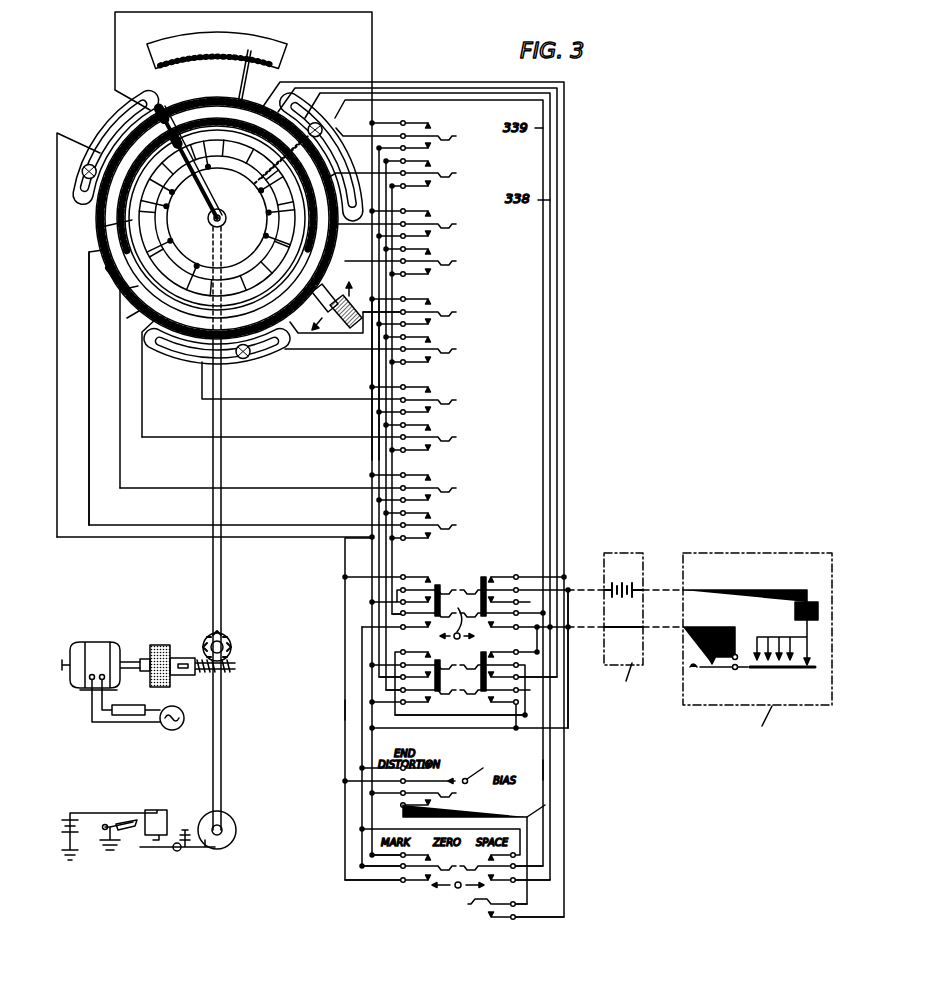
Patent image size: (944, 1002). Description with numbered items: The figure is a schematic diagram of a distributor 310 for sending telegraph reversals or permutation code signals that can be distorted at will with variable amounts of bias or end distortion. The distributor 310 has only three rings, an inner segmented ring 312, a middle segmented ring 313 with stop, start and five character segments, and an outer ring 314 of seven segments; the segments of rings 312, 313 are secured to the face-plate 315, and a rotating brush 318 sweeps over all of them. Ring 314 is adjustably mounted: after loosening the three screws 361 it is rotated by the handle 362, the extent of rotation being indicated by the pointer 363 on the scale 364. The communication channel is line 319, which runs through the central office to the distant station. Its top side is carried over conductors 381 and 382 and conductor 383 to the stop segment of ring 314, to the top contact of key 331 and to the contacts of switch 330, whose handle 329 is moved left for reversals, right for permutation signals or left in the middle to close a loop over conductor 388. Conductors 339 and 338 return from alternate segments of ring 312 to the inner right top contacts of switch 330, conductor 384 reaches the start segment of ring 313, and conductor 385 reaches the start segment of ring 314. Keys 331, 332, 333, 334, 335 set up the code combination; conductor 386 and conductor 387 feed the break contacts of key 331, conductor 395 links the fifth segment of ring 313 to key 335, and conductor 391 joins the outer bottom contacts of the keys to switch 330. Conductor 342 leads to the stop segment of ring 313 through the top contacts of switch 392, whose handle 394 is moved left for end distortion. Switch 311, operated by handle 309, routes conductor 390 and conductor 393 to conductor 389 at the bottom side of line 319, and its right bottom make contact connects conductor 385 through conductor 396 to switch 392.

The distributor 310 is at (207, 218).
The ring 312 is at (98, 228).
The ring 313 is at (140, 268).
The ring 314 is at (127, 318).
The face-plate 315 is at (229, 228).
The brush 318 is at (213, 210).
The conductor 338 is at (248, 192).
The conductor 339 is at (270, 176).
The screws 361 is at (86, 165).
The handle 362 is at (355, 297).
The pointer 363 is at (246, 76).
The scale 364 is at (290, 50).
The conductor 383 is at (377, 55).
The conductor 384 is at (557, 225).
The conductor 385 is at (564, 278).
The key 331 is at (424, 155).
The key 332 is at (424, 243).
The key 333 is at (424, 331).
The key 334 is at (424, 419).
The key 335 is at (424, 507).
The conductor 386 is at (382, 466).
The conductor 387 is at (372, 462).
The conductor 395 is at (146, 525).
The conductor 342 is at (318, 536).
The conductor 391 is at (395, 570).
The handle 329 is at (466, 651).
The switch 330 is at (464, 690).
The conductor 381 is at (572, 722).
The conductor 382 is at (468, 728).
The conductor 388 is at (438, 716).
The conductor 390 is at (345, 710).
The conductor 389 is at (542, 772).
The handle 394 is at (470, 773).
The switch 392 is at (465, 807).
The conductor 393 is at (527, 822).
The handle 309 is at (448, 888).
The switch 311 is at (474, 911).
The conductor 396 is at (527, 890).
The line 319 is at (650, 632).